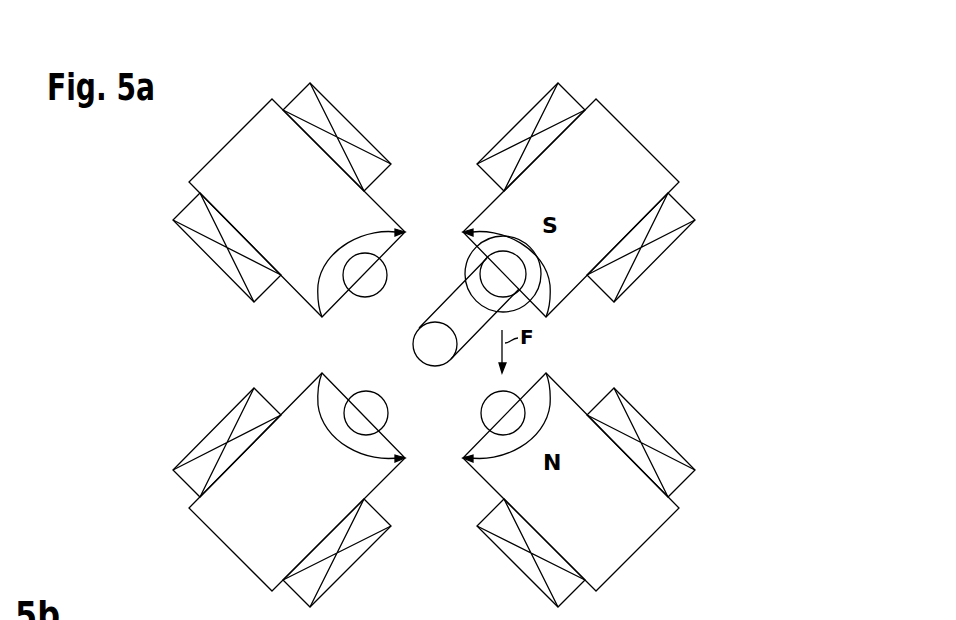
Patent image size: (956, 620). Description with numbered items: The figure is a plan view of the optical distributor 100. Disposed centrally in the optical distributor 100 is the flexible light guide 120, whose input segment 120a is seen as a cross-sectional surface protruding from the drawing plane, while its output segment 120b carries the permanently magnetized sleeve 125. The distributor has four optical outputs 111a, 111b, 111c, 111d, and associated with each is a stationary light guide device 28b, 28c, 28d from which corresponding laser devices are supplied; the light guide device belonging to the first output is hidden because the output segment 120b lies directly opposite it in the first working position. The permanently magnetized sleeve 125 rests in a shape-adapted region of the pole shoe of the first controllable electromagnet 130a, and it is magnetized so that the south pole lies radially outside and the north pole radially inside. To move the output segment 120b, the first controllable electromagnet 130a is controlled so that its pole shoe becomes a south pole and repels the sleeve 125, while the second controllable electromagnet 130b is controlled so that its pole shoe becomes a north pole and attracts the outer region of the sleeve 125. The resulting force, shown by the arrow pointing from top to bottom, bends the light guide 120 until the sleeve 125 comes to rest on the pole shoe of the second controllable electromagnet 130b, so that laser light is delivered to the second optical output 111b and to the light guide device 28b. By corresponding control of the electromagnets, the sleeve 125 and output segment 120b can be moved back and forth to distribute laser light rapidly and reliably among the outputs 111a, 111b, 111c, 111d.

The optical distributor 100 is at (288, 64).
The first controllable electromagnet 130a is at (663, 110).
The second controllable electromagnet 130b is at (664, 577).
The flexible light guide 120 is at (432, 290).
The input segment 120a is at (412, 345).
The output segment 120b is at (448, 250).
The permanently magnetized sleeve 125 is at (465, 236).
The stationary light guide device 28d is at (365, 292).
The stationary light guide device 28c is at (384, 414).
The stationary light guide device 28b is at (485, 412).
The optical output 111d is at (340, 310).
The optical output 111c is at (342, 381).
The optical output 111a is at (548, 322).
The optical output 111b is at (528, 362).